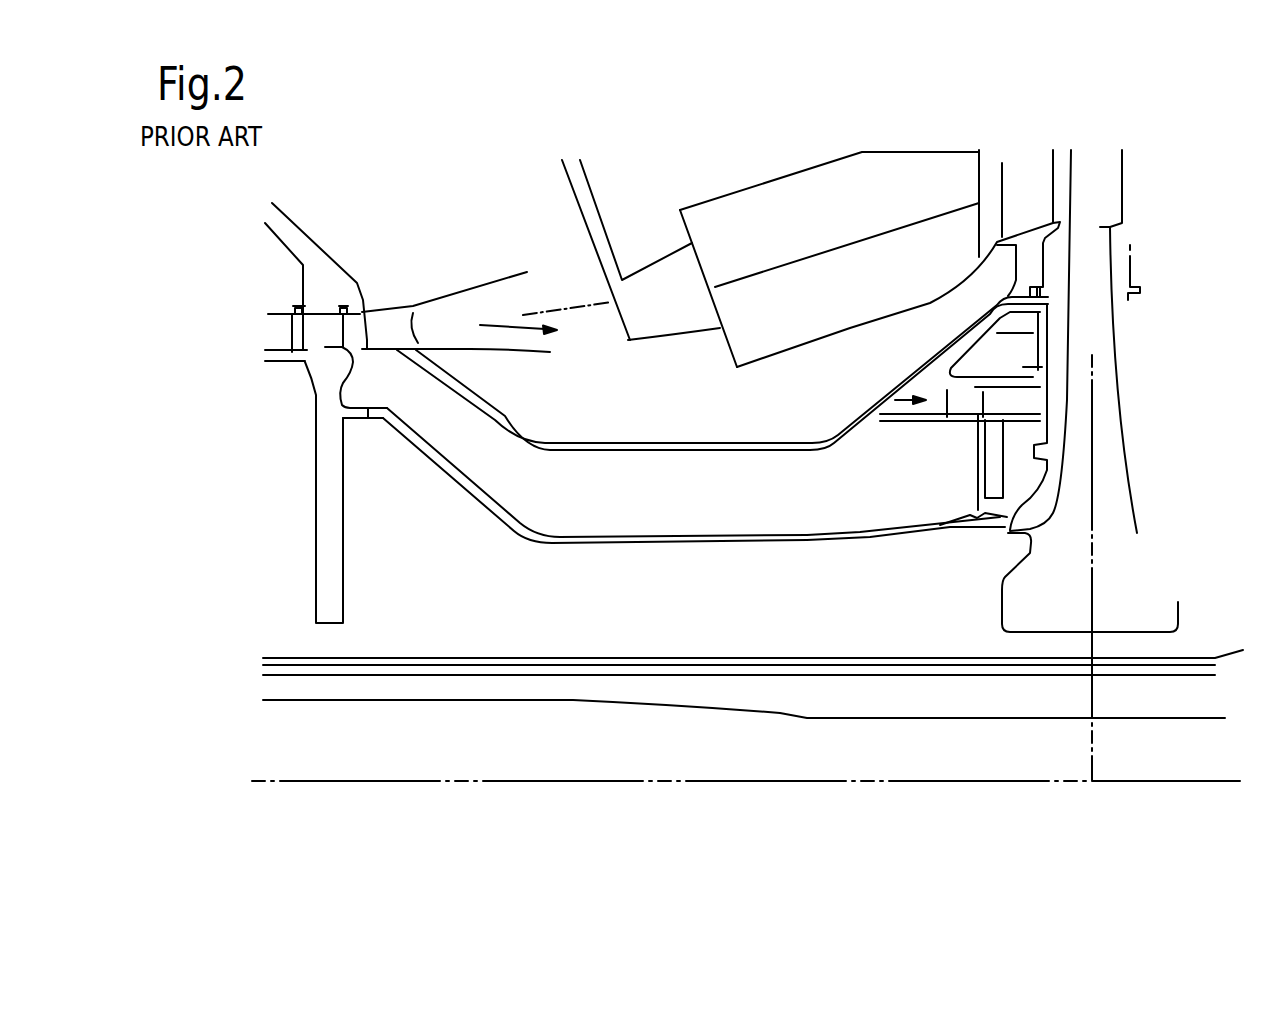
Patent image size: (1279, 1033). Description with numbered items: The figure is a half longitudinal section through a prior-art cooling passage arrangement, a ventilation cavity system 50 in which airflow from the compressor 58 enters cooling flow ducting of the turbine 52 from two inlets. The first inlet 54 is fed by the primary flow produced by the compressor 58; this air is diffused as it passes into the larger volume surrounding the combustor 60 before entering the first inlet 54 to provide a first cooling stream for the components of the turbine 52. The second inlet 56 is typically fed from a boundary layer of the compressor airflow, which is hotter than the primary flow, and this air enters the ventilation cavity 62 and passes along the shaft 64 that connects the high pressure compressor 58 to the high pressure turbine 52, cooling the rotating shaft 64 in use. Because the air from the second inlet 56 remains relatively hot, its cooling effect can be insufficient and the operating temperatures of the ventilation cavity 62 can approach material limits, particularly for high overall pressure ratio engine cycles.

The ventilation cavity system 50 is at (420, 191).
The turbine 52 is at (1102, 209).
The first inlet 54 is at (880, 399).
The second inlet 56 is at (357, 360).
The compressor 58 is at (320, 333).
The combustor 60 is at (725, 211).
The ventilation cavity 62 is at (548, 491).
The shaft 64 is at (668, 542).